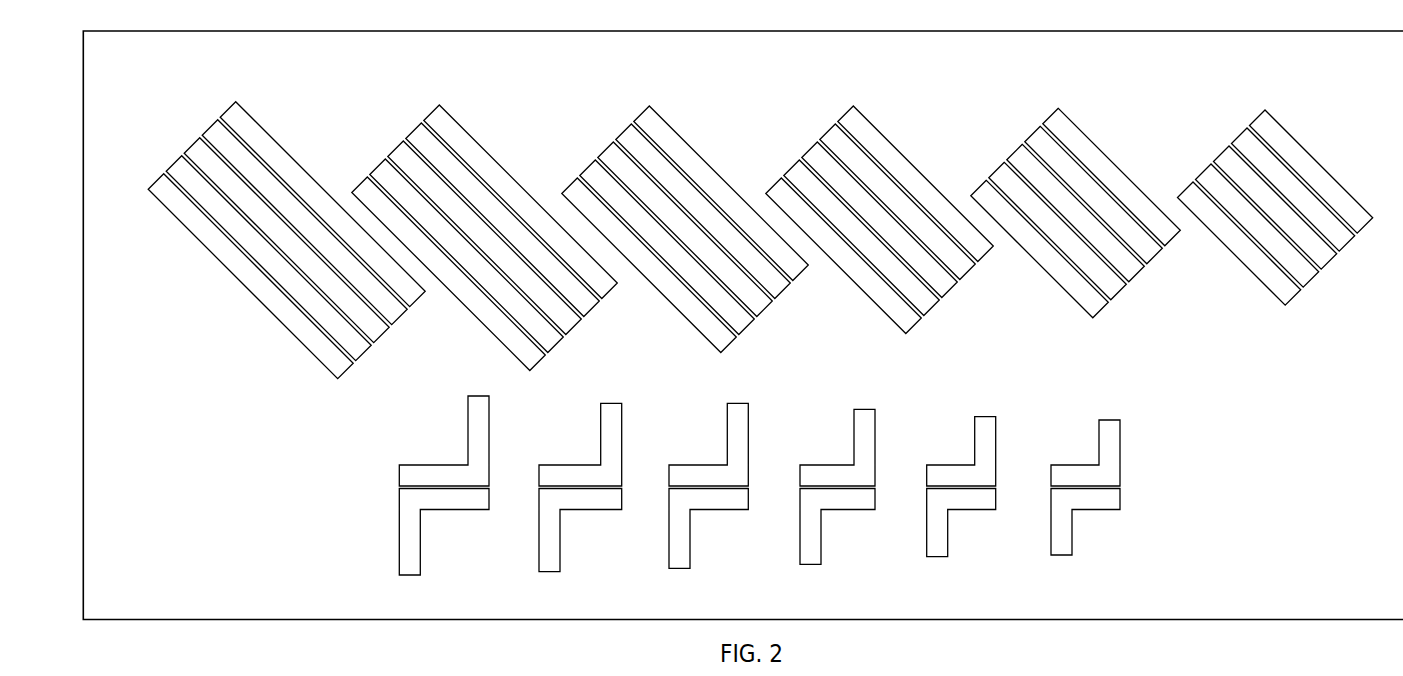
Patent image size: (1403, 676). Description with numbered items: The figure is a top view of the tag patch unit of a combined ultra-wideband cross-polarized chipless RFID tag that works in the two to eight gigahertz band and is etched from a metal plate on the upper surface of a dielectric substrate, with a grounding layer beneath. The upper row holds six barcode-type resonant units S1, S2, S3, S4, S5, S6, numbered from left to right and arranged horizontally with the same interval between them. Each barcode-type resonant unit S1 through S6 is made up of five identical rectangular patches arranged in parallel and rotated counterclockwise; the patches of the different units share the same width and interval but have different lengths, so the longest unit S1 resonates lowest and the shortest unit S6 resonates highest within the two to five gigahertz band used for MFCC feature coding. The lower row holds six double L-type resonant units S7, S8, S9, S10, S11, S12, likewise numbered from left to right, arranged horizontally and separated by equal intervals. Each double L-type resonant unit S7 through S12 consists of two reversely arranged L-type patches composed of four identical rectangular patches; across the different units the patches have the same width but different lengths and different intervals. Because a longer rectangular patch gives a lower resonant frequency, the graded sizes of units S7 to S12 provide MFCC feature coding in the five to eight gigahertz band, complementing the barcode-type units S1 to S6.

The barcode-type resonant unit S1 is at (286, 213).
The barcode-type resonant unit S2 is at (485, 209).
The barcode-type resonant unit S3 is at (685, 200).
The barcode-type resonant unit S4 is at (880, 191).
The barcode-type resonant unit S5 is at (1076, 183).
The barcode-type resonant unit S6 is at (1275, 176).
The double L-type resonant unit S7 is at (442, 506).
The double L-type resonant unit S8 is at (573, 509).
The double L-type resonant unit S9 is at (702, 509).
The double L-type resonant unit S10 is at (831, 512).
The double L-type resonant unit S11 is at (958, 516).
The double L-type resonant unit S12 is at (1085, 518).